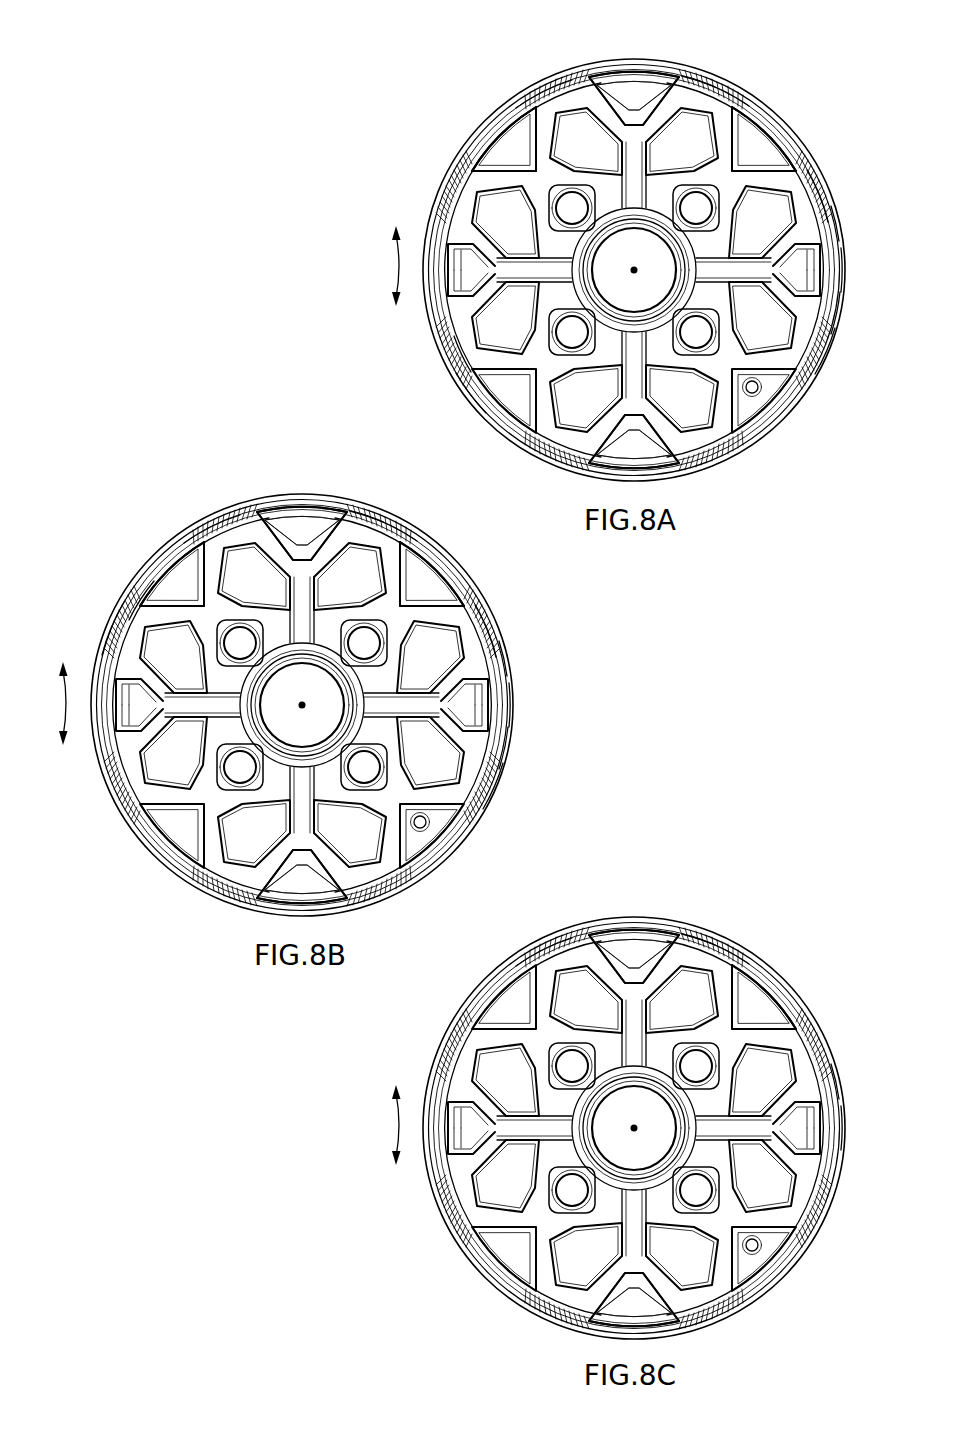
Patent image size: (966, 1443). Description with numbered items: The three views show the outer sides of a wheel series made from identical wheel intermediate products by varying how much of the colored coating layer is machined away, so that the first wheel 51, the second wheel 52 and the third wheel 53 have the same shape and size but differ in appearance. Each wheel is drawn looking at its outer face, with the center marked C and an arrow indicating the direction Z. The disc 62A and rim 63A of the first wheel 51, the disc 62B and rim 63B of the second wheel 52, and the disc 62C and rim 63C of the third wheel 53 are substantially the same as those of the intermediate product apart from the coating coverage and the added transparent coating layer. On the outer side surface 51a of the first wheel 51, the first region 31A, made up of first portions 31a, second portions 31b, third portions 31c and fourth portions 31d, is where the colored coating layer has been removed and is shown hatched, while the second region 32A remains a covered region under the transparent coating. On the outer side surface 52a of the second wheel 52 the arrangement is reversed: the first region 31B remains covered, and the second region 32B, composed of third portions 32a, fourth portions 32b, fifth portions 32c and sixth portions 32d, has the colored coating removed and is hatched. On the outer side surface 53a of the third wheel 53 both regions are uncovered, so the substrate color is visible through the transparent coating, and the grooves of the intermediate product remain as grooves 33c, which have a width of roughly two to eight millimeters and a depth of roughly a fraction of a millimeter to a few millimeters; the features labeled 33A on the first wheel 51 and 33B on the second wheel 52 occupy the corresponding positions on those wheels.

In FIG. 8A, the first wheel 51 is at (445, 160).
In FIG. 8A, the outer side surface 51a is at (533, 128).
In FIG. 8A, the first region 31A is at (703, 83).
In FIG. 8A, the second region 32A is at (768, 158).
In FIG. 8A, the rim hatched portion 33A is at (572, 88).
In FIG. 8A, the first portions 31a is at (828, 348).
In FIG. 8A, the second portions 31b is at (836, 318).
In FIG. 8A, the third portions 31c is at (842, 272).
In FIG. 8C, the third portions 31c is at (703, 940).
In FIG. 8A, the fourth portions 31d is at (836, 226).
In FIG. 8A, the disc 62A is at (470, 395).
In FIG. 8A, the rim 63A is at (462, 355).
In FIG. 8B, the second wheel 52 is at (113, 557).
In FIG. 8B, the outer side surface 52a is at (200, 565).
In FIG. 8B, the first region 31B is at (372, 520).
In FIG. 8B, the second region 32B is at (436, 592).
In FIG. 8B, the rim hatched portion 33B is at (237, 520).
In FIG. 8B, the third portions 32a is at (492, 786).
In FIG. 8B, the fourth portions 32b is at (502, 752).
In FIG. 8B, the fifth portions 32c is at (508, 706).
In FIG. 8C, the fifth portions 32c is at (768, 1012).
In FIG. 8B, the sixth portions 32d is at (503, 662).
In FIG. 8B, the disc 62B is at (125, 640).
In FIG. 8B, the rim 63B is at (140, 600).
In FIG. 8C, the third wheel 53 is at (445, 1043).
In FIG. 8C, the outer side surface 53a is at (562, 947).
In FIG. 8C, the groove 33c is at (735, 952).
In FIG. 8C, the disc 62C is at (840, 1131).
In FIG. 8C, the rim 63C is at (838, 1086).
In FIG. 8A, the center of wheel C is at (634, 270).
In FIG. 8B, the center of wheel C is at (302, 705).
In FIG. 8C, the center of wheel C is at (634, 1128).
In FIG. 8A, the Z direction Z is at (376, 266).
In FIG. 8B, the Z direction Z is at (42, 703).
In FIG. 8C, the Z direction Z is at (376, 1125).